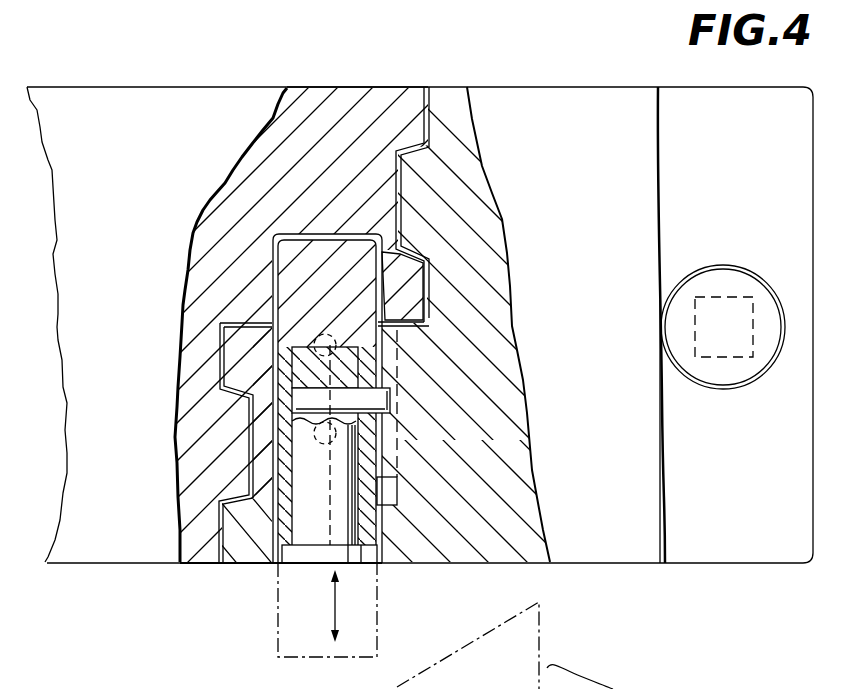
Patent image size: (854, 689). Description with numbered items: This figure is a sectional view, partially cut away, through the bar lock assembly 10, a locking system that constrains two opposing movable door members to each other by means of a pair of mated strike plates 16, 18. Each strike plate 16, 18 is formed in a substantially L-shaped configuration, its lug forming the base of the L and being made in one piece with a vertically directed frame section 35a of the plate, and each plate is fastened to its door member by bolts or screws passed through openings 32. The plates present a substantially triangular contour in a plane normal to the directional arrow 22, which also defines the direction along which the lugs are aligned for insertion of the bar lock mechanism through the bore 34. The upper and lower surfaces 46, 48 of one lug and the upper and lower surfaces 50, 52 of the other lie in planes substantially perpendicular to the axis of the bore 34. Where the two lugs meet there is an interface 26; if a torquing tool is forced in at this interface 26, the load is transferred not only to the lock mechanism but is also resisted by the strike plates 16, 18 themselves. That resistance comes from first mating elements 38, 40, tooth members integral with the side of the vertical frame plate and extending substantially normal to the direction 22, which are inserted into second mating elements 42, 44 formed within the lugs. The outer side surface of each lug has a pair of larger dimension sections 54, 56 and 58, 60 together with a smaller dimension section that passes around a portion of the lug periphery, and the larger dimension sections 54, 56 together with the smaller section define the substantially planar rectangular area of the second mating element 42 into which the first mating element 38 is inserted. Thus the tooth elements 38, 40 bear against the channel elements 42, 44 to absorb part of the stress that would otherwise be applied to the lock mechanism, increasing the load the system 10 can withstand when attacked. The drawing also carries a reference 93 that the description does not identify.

The bar lock assembly 10 is at (558, 76).
The strike plate 16 is at (115, 547).
The strike plate 18 is at (620, 550).
The directional arrow 22 is at (333, 607).
The interface 26 is at (410, 328).
The opening 32 is at (735, 370).
The bore 34 is at (352, 195).
The vertically directed frame section 35a is at (645, 95).
The first mating element 38 is at (255, 418).
The first mating element 40 is at (402, 203).
The second mating element 42 is at (249, 462).
The second mating element 44 is at (397, 162).
The upper surface 46 is at (342, 122).
The lower surface 48 is at (243, 323).
The upper surface 50 is at (233, 338).
The lower surface 52 is at (260, 563).
The larger dimension section 54 is at (185, 315).
The larger dimension section 56 is at (235, 538).
The larger dimension section 58 is at (415, 283).
The larger dimension section 60 is at (417, 98).
The guide member 93 is at (542, 645).